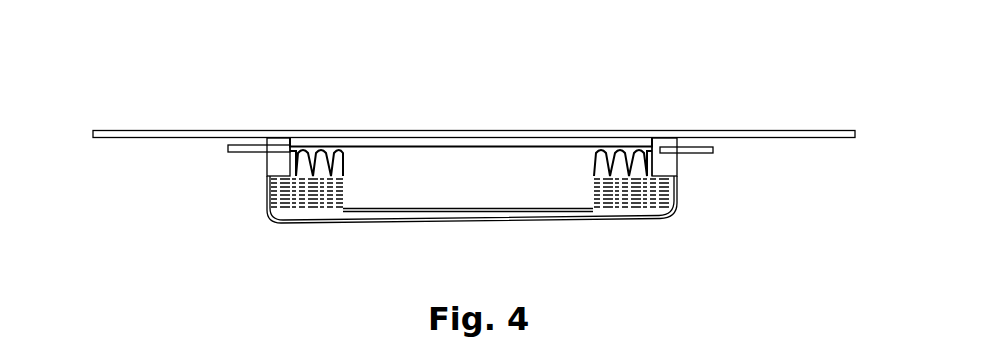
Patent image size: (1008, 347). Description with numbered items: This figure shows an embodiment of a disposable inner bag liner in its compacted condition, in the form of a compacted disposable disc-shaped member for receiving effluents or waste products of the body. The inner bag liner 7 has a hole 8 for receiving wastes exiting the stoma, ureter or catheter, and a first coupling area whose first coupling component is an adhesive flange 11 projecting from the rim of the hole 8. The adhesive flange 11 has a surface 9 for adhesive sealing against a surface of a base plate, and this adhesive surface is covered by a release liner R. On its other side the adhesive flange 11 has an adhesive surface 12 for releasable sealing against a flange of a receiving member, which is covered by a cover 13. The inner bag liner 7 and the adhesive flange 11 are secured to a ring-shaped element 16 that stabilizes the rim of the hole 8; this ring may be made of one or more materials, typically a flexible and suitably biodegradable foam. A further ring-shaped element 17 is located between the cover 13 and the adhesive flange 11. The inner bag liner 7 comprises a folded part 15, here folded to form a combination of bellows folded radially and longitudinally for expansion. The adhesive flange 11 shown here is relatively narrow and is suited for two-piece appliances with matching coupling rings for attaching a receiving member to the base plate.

The release liner R is at (737, 132).
The hole 8 is at (457, 158).
The inner bag liner 7 is at (467, 208).
The cover 13 is at (627, 218).
The ring-shaped element 16 is at (292, 141).
The adhesive surface 12 is at (250, 152).
The folded part 15 is at (587, 183).
The further ring-shaped element 17 is at (662, 167).
The adhesive flange 11 is at (707, 153).
The surface 9 is at (697, 150).